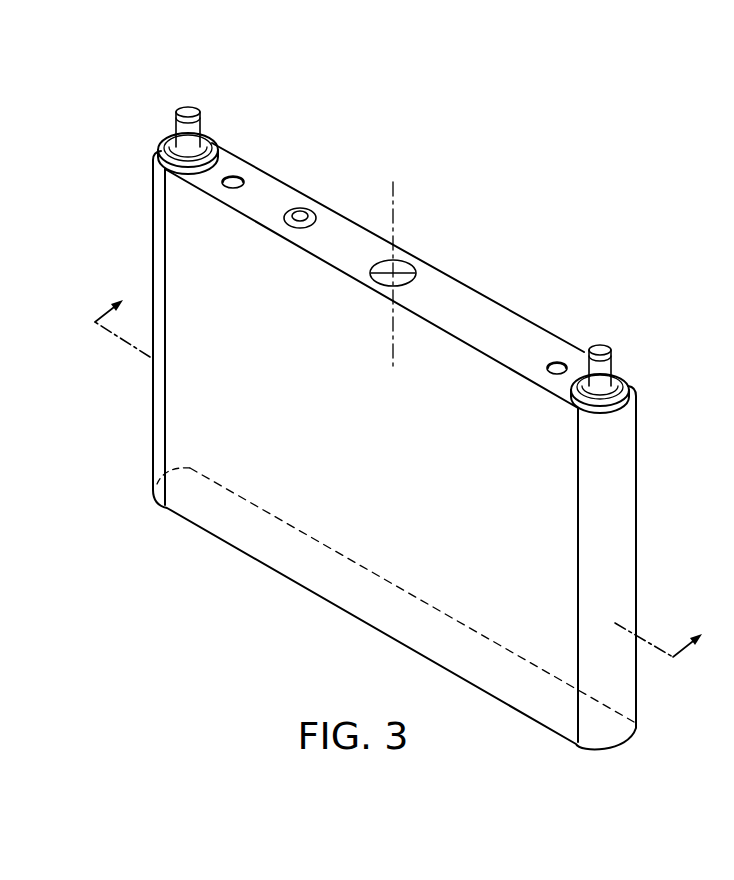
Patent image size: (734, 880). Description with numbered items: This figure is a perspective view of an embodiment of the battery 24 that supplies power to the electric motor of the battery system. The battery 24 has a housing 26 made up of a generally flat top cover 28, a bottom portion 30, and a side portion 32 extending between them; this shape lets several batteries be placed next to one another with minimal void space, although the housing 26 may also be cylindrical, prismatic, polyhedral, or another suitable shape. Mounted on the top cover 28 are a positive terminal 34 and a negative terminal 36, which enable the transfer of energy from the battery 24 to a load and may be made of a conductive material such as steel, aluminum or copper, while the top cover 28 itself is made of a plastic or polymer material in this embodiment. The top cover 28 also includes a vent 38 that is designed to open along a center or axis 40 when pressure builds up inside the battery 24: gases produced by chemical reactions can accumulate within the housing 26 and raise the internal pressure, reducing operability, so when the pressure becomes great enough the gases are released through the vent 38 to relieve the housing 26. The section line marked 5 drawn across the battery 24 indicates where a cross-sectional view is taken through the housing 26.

The battery 24 is at (474, 157).
The housing 26 is at (344, 217).
The top cover 28 is at (506, 323).
The bottom portion 30 is at (288, 548).
The side portion 32 is at (389, 453).
The positive terminal 34 is at (189, 105).
The negative terminal 36 is at (598, 345).
The vent 38 is at (414, 266).
The axis 40 is at (395, 335).
The section line 5- 5 is at (408, 470).